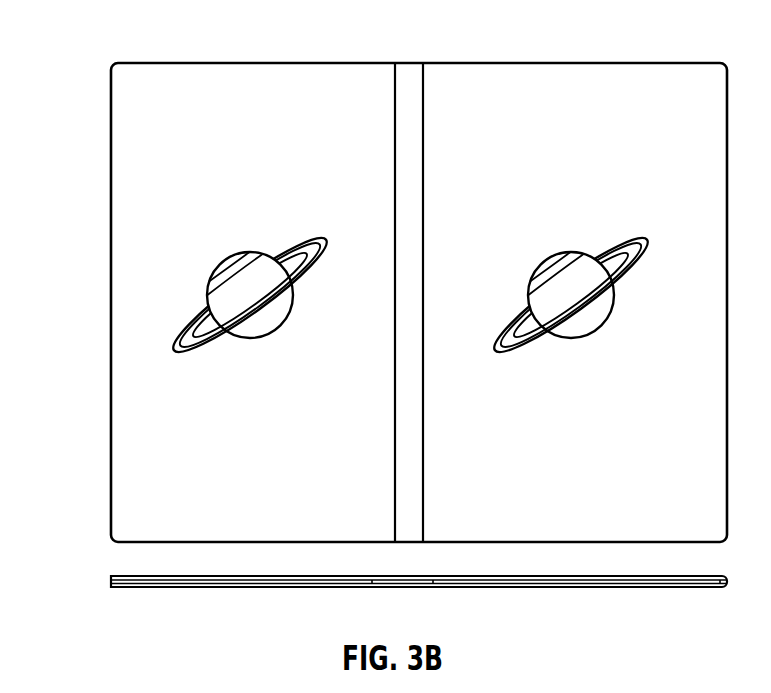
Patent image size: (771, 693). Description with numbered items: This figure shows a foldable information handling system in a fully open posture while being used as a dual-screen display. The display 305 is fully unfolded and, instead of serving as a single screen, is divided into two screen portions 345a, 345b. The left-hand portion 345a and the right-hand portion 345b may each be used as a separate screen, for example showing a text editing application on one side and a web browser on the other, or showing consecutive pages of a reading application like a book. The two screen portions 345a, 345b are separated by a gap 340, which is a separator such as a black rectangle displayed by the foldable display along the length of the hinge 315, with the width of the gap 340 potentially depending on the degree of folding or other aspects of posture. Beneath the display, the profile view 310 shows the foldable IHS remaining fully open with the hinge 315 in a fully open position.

The display 305 is at (153, 200).
The left-hand screen portion 345a is at (327, 82).
The right-hand screen portion 345b is at (517, 87).
The gap 340 is at (412, 158).
The profile view 310 is at (111, 581).
The hinge 315 is at (402, 588).